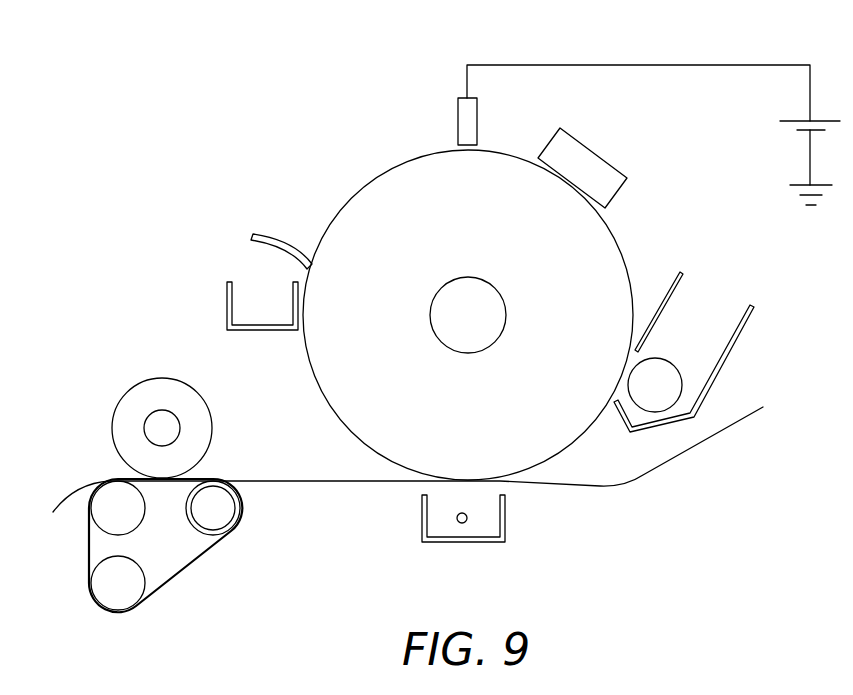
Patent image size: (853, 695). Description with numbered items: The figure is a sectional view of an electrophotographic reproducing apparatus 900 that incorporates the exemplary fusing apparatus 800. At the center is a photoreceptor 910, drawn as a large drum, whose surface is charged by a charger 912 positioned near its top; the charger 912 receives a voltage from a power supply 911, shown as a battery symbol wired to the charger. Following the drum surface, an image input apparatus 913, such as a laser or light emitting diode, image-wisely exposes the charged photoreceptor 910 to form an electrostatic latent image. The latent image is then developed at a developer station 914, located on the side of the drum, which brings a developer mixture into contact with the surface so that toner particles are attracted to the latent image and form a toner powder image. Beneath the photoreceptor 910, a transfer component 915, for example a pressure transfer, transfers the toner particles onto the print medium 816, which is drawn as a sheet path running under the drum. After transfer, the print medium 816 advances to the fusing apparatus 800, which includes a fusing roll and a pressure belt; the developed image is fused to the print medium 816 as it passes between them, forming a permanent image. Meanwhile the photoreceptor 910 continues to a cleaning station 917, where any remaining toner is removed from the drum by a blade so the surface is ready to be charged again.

The electrophotographic reproducing apparatus 900 is at (297, 93).
The photoreceptor 910 is at (615, 243).
The power supply 911 is at (810, 92).
The charger 912 is at (458, 121).
The image input apparatus 913 is at (595, 152).
The developer station 914 is at (708, 303).
The transfer component 915 is at (507, 515).
The cleaning station 917 is at (248, 280).
The print medium 816 is at (697, 450).
The fusing apparatus 800 is at (102, 398).